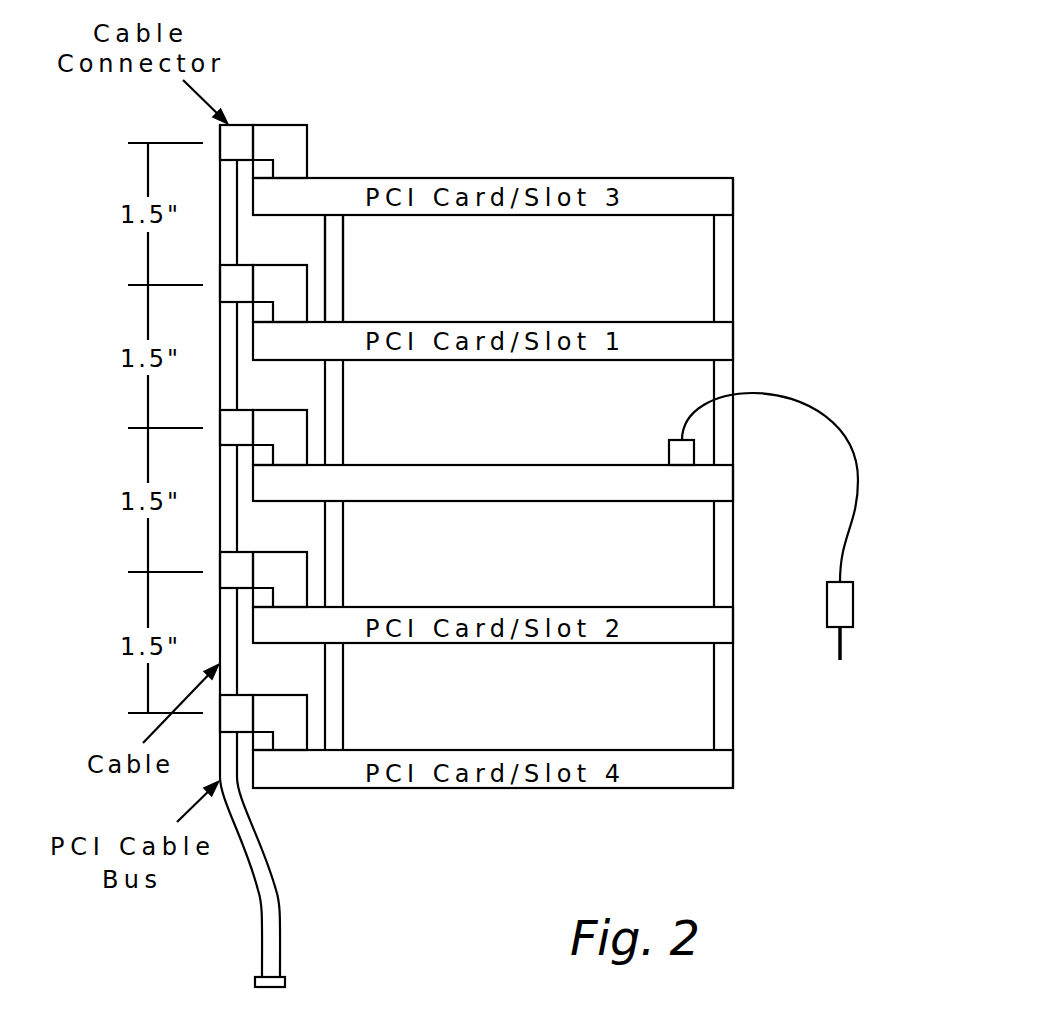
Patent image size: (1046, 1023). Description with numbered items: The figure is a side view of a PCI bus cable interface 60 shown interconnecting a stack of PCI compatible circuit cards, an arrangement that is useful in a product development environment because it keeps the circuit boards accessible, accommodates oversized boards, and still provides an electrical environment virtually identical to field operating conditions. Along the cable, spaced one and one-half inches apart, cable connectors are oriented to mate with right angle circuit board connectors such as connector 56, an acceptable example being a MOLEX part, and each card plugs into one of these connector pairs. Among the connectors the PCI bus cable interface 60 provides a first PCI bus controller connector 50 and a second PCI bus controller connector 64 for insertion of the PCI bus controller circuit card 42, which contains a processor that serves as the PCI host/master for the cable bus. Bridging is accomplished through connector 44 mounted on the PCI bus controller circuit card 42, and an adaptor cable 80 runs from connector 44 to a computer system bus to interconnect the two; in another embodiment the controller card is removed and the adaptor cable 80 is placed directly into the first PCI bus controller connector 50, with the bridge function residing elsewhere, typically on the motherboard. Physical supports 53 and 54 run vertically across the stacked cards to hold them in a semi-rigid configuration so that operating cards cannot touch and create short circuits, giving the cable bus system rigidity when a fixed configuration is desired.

The PCI bus controller circuit card 42 is at (750, 482).
The connector 44 is at (676, 440).
The PCI bus controller connector 1 50 is at (233, 423).
The physical support 53 is at (359, 258).
The physical support 54 is at (737, 273).
The connector 56 is at (312, 121).
The PCI bus cable interface 60 is at (203, 318).
The PCI bus controller connector 2 64 is at (273, 410).
The adaptor cable 80 is at (854, 600).